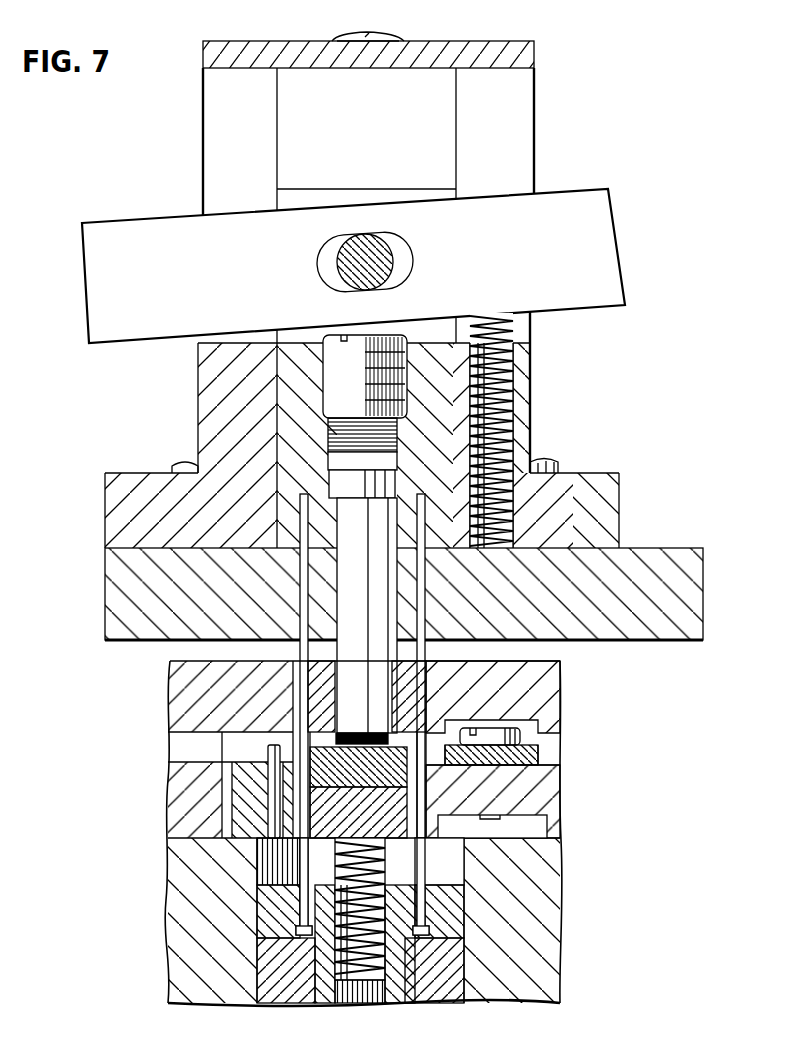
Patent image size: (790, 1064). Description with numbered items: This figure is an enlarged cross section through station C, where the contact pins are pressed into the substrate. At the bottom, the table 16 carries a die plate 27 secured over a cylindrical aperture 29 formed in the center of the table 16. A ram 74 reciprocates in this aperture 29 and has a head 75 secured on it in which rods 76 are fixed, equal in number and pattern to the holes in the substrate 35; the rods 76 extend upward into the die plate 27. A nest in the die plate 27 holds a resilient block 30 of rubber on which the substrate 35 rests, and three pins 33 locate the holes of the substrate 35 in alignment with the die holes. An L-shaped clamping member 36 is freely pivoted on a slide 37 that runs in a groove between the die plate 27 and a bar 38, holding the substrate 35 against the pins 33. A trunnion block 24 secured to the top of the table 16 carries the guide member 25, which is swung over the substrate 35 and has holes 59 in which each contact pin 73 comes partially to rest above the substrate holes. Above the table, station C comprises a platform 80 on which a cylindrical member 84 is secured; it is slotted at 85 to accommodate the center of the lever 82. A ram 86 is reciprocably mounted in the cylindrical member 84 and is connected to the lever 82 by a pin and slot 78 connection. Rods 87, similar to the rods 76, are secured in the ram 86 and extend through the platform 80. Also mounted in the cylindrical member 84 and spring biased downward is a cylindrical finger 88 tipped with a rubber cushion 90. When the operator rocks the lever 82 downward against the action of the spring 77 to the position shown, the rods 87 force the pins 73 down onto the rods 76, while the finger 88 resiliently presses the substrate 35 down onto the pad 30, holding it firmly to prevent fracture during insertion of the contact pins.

The slot 85 is at (525, 157).
The ram 86 is at (308, 195).
The lever 82 is at (604, 252).
The pin and slot connection 78 is at (355, 280).
The cylindrical member 84 is at (523, 403).
The spring 77 is at (505, 450).
The platform 80 is at (653, 562).
The cylindrical finger 88 is at (368, 624).
The rods 87 is at (417, 654).
The holes 59 is at (425, 703).
The guide member 25 is at (553, 705).
The rubber cushion 90 is at (358, 732).
The substrate 35 is at (292, 748).
The clamping member 36 is at (525, 752).
The pins 33 is at (272, 783).
The trunnion block 24 is at (175, 790).
The resilient block 30 is at (362, 784).
The contact pin 73 is at (417, 793).
The bar 38 is at (560, 806).
The slide 37 is at (470, 806).
The die plate 27 is at (322, 846).
The head 75 is at (394, 897).
The rods 76 is at (422, 856).
The cylindrical aperture 29 is at (464, 868).
The table 16 is at (550, 890).
The ram 74 is at (440, 1000).